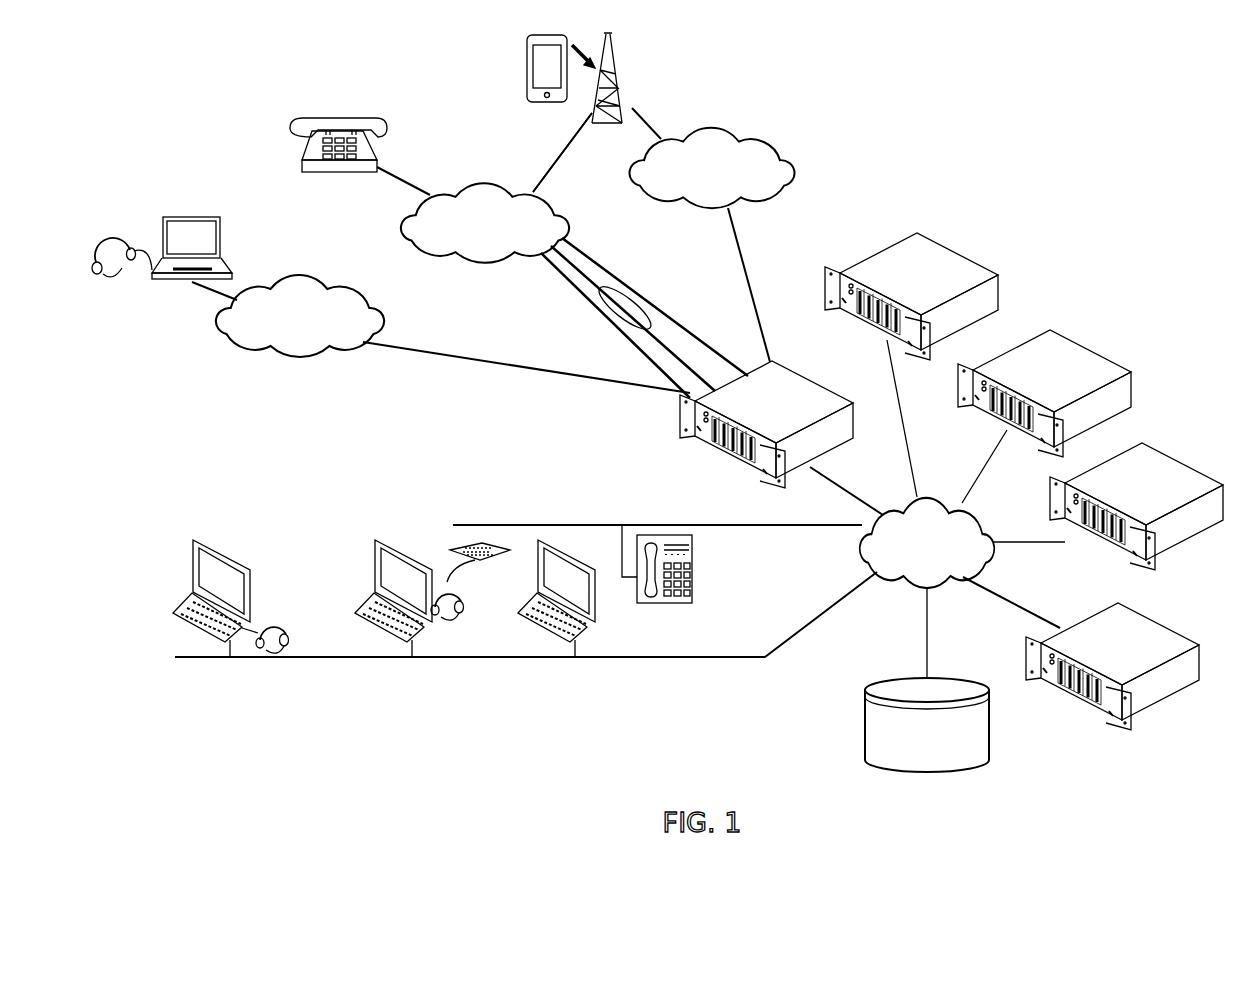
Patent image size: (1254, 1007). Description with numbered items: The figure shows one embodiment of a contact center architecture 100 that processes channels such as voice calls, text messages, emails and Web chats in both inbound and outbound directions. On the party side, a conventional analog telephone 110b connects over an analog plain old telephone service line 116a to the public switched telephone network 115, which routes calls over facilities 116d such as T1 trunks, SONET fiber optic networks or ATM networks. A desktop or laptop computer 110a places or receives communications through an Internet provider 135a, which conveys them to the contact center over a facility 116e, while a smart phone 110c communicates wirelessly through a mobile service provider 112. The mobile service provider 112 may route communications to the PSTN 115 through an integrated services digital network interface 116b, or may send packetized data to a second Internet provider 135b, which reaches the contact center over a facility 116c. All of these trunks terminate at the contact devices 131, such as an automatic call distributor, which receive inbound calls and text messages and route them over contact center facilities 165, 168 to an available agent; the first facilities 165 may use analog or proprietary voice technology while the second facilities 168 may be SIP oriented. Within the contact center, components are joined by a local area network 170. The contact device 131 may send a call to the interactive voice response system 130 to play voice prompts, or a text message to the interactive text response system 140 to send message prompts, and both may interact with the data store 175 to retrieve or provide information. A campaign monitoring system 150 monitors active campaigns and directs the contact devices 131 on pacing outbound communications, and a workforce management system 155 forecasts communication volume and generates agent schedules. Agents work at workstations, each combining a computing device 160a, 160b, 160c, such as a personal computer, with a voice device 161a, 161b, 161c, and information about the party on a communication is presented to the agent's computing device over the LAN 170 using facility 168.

The contact center architecture 100 is at (928, 167).
The desktop or laptop computer 110a is at (191, 207).
The conventional analog telephone 110b is at (378, 157).
The smart phone 110c is at (527, 72).
The mobile service provider 112 is at (622, 90).
The public switched telephone network 115 is at (485, 223).
The analog plain old telephone service line 116a is at (408, 185).
The integrated services digital network interface 116b is at (570, 137).
The facility 116c is at (748, 287).
The facilities 116d is at (612, 318).
The facility 116e is at (445, 356).
The interactive voice response system 130 is at (1108, 506).
The contact device 131 is at (781, 438).
The Internet provider 135a is at (288, 316).
The Internet provider 135b is at (711, 168).
The interactive text response system 140 is at (1044, 416).
The campaign monitoring system 150 is at (911, 365).
The workforce management system 155 is at (1081, 653).
The computing device 160a is at (250, 585).
The computing device 160b is at (432, 582).
The computing device 160c is at (595, 590).
The voice device 161a is at (288, 630).
The voice device 161b is at (465, 597).
The voice device 161c is at (675, 603).
The first facilities 165 is at (725, 525).
The second facilities 168 is at (730, 660).
The local area network 170 is at (815, 558).
The data store 175 is at (927, 680).